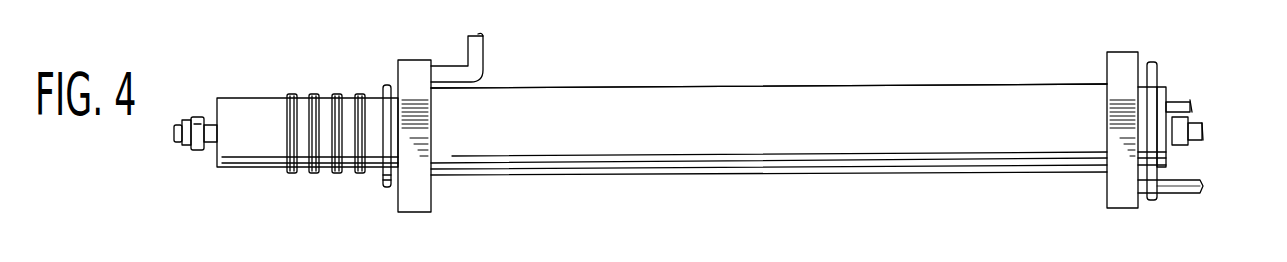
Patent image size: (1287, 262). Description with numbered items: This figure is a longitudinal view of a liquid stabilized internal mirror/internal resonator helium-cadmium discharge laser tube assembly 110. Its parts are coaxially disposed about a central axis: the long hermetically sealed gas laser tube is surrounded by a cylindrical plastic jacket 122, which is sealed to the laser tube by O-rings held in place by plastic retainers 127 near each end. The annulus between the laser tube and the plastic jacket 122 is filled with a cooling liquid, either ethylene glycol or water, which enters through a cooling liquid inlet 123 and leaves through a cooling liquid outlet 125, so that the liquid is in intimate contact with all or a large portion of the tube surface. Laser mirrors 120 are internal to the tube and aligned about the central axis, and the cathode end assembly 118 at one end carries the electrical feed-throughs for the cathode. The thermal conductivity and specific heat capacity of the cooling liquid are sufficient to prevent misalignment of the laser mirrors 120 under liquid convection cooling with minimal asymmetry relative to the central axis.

The liquid stabilized internal mirror/internal resonator helium-cadmium discharge la 110 is at (824, 81).
The cathode end assembly 118 is at (1166, 157).
The laser mirrors 120 is at (1199, 127).
The cylindrical plastic jacket 122 is at (769, 129).
The cooling liquid inlet 123 is at (1178, 194).
The cooling liquid outlet 125 is at (480, 53).
The plastic retainers 127 is at (386, 91).